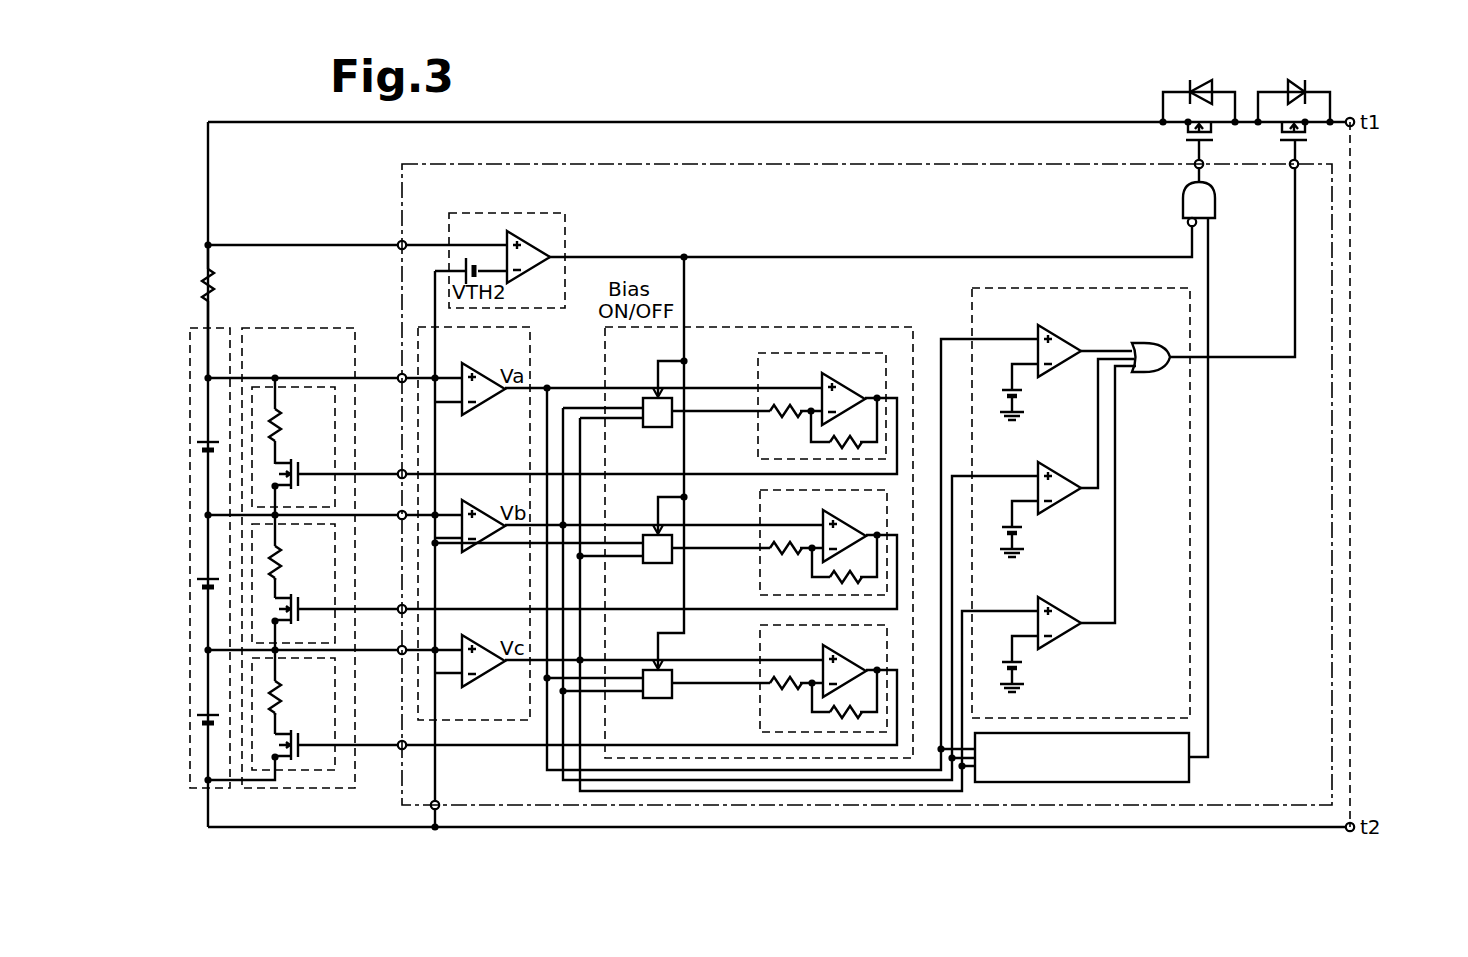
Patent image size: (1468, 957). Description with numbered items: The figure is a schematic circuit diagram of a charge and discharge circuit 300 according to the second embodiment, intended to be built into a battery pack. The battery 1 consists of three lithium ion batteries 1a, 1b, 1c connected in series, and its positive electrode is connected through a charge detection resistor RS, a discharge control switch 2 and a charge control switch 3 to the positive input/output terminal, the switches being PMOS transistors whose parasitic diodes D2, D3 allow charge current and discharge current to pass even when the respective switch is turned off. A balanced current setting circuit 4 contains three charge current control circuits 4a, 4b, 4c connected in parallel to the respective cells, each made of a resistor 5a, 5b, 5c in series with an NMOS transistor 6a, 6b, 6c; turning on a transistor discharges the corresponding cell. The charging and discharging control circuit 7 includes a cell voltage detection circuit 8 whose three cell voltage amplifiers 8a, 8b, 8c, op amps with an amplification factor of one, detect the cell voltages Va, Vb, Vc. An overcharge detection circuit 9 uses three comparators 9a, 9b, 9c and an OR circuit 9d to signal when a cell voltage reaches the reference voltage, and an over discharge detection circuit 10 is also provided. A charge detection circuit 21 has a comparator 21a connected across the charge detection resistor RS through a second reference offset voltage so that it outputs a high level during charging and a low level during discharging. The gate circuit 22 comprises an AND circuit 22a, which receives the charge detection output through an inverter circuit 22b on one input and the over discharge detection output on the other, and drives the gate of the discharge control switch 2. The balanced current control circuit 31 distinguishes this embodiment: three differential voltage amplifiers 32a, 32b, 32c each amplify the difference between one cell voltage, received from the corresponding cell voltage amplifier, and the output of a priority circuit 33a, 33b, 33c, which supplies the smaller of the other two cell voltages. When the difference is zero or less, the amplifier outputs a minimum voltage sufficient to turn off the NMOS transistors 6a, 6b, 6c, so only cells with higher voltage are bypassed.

The battery 1 is at (190, 330).
The lithium ion battery 1a is at (195, 440).
The lithium ion battery 1b is at (195, 579).
The lithium ion battery 1c is at (195, 715).
The discharge control switch 2 is at (1168, 76).
The charge control switch 3 is at (1320, 76).
The balanced current setting circuit 4 is at (322, 328).
The charge current control circuit 4a is at (338, 404).
The charge current control circuit 4b is at (338, 542).
The charge current control circuit 4c is at (338, 677).
The resistor 5a is at (283, 418).
The resistor 5b is at (283, 555).
The resistor 5c is at (283, 690).
The NMOS transistor 6a is at (290, 460).
The NMOS transistor 6b is at (290, 595).
The NMOS transistor 6c is at (290, 731).
The charging and discharging control circuit 7 is at (406, 165).
The cell voltage detection circuit 8 is at (530, 336).
The cell voltage amplifier 8a is at (488, 404).
The cell voltage amplifier 8b is at (488, 541).
The cell voltage amplifier 8c is at (488, 676).
The overcharge detection circuit 9 is at (1080, 290).
The comparator 9a is at (1056, 340).
The comparator 9b is at (1056, 477).
The comparator 9c is at (1056, 612).
The OR circuit 9d is at (1135, 372).
The over discharge detection circuit 10 is at (1189, 770).
The charge detection circuit 21 is at (565, 226).
The comparator 21a is at (535, 270).
The gate circuit 22 is at (1182, 211).
The AND circuit 22a is at (1214, 206).
The inverter circuit 22b is at (1190, 224).
The balanced current control circuit 31 is at (830, 325).
The differential voltage amplifier 32a is at (758, 377).
The differential voltage amplifier 32b is at (760, 512).
The differential voltage amplifier 32c is at (760, 645).
The priority circuit 33a is at (658, 427).
The priority circuit 33b is at (658, 563).
The priority circuit 33c is at (658, 698).
The charge and discharge circuit 300 is at (1388, 240).
The charge detection resistor RS is at (200, 278).
The parasitic diode D2 is at (1191, 82).
The parasitic diode D3 is at (1296, 84).